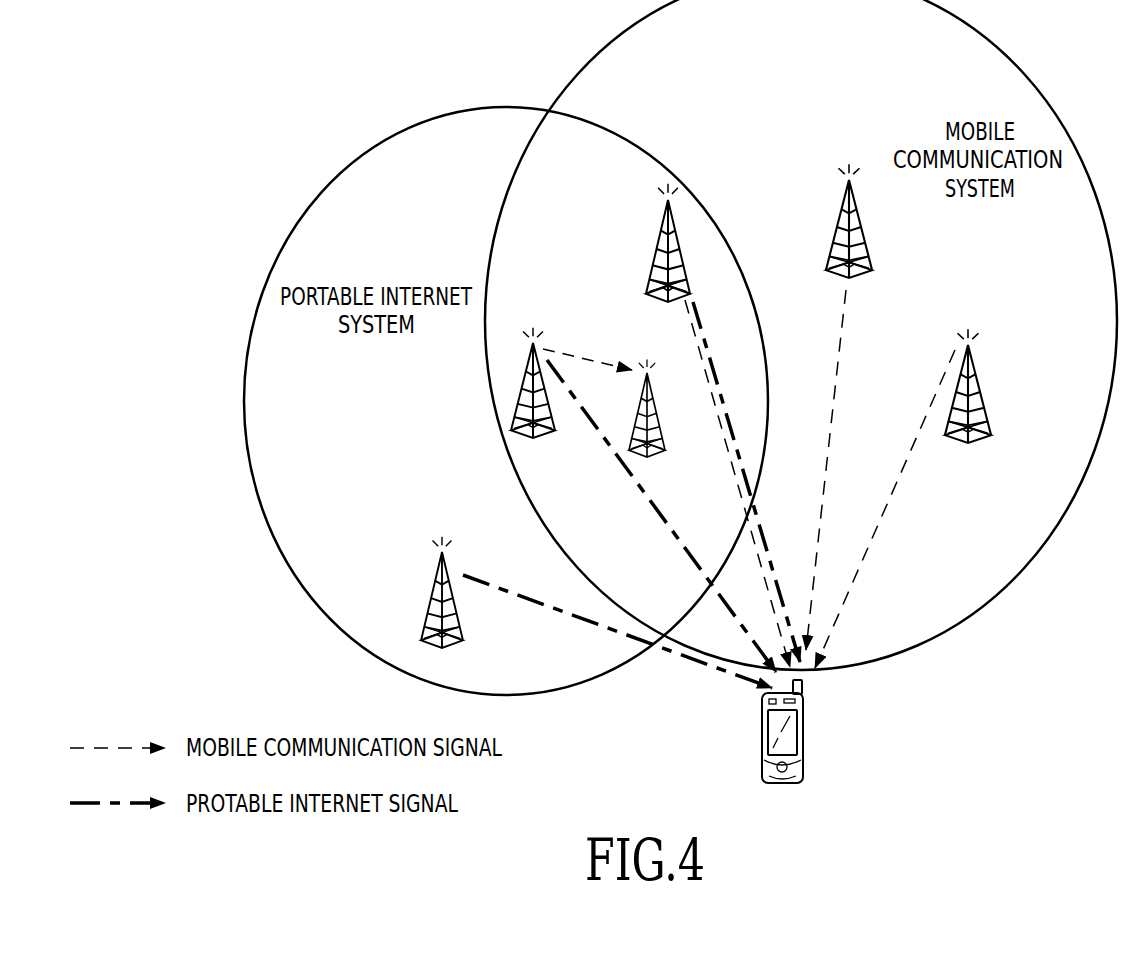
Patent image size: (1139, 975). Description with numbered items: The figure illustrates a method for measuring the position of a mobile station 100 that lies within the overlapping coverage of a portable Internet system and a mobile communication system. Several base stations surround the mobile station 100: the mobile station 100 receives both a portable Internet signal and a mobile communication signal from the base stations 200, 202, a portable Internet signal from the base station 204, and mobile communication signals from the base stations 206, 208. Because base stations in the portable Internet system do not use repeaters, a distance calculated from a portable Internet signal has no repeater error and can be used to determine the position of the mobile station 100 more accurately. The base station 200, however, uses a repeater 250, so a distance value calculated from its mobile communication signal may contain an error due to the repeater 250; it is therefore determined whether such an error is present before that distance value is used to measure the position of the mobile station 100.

The mobile station 100 is at (805, 736).
The base station 200 is at (537, 440).
The base station 202 is at (655, 244).
The base station 204 is at (426, 597).
The base station 206 is at (865, 232).
The base station 208 is at (985, 391).
The repeater 250 is at (650, 459).